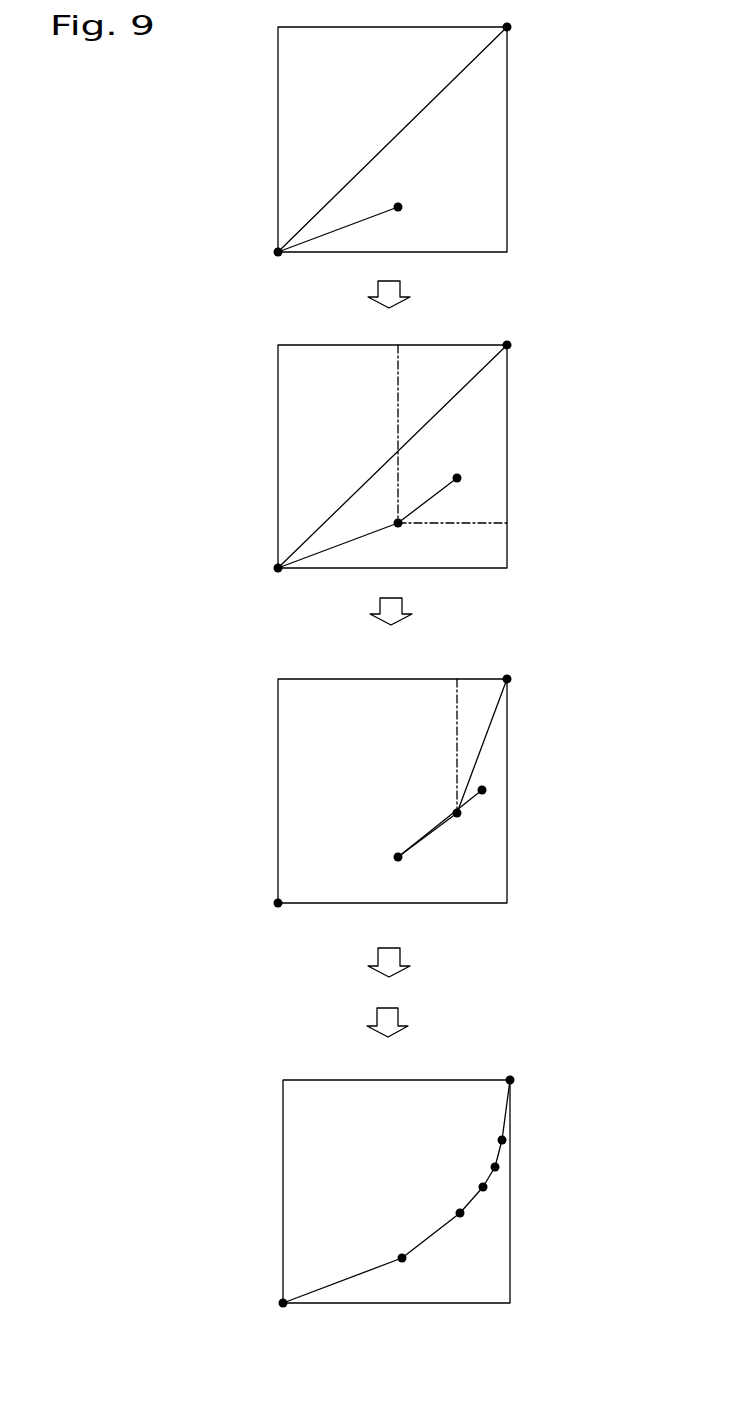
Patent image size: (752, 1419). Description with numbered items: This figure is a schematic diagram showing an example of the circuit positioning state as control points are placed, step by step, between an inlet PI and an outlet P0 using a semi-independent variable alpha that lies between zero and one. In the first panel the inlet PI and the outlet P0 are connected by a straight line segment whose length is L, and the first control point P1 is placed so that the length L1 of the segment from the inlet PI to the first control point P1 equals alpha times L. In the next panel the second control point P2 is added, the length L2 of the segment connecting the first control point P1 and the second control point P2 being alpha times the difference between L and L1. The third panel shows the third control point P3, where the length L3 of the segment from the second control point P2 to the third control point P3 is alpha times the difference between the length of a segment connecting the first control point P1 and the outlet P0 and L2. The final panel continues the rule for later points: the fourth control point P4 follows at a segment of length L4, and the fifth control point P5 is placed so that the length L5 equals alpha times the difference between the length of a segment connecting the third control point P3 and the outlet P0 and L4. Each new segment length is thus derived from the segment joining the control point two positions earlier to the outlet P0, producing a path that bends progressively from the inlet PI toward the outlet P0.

The outlet P0 is at (531, 546).
The inlet PI is at (264, 799).
The first control point P1 is at (403, 209).
The second control point P2 is at (455, 474).
The third control point P3 is at (487, 791).
The fourth control point P4 is at (499, 1168).
The fifth control point P5 is at (506, 1137).
The length of line segment connecting inlet and outlet L is at (392, 297).
The length of line segment connecting inlet and first control point L1 is at (338, 387).
The length of line segment connecting first and second control points L2 is at (430, 667).
The length of line segment connecting second and third control points L3 is at (470, 801).
The length of line segment connecting third and fourth control points L4 is at (490, 1178).
The length of line segment connecting fourth and fifth control points L5 is at (500, 1153).